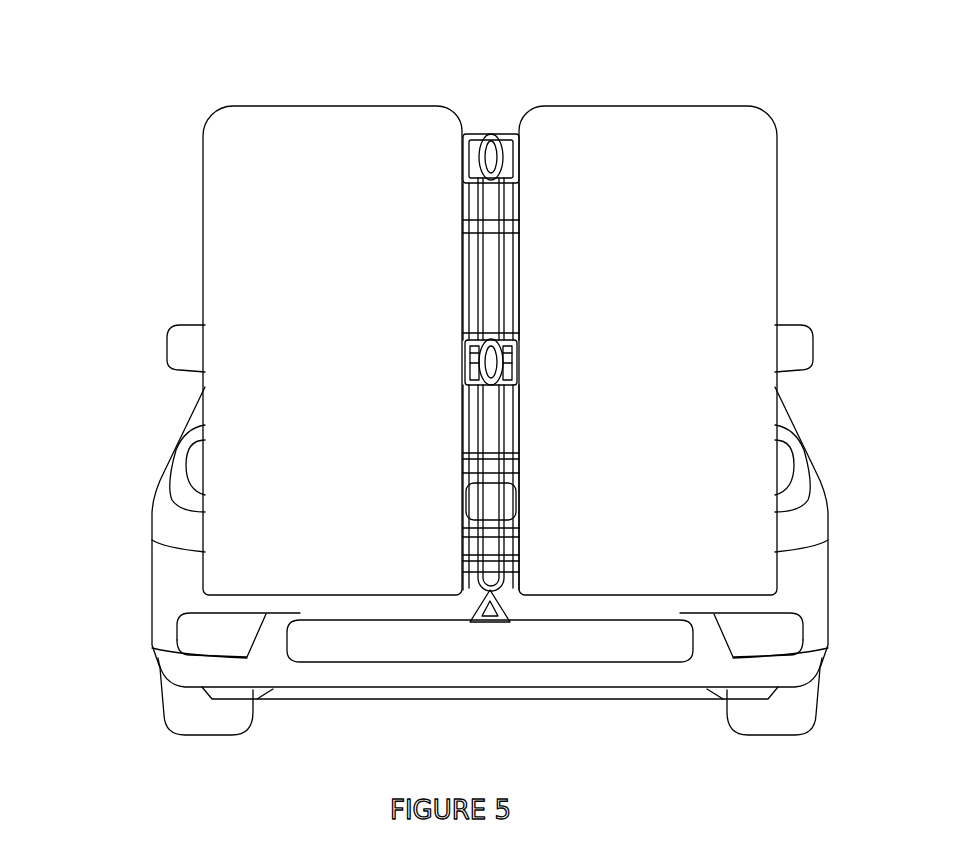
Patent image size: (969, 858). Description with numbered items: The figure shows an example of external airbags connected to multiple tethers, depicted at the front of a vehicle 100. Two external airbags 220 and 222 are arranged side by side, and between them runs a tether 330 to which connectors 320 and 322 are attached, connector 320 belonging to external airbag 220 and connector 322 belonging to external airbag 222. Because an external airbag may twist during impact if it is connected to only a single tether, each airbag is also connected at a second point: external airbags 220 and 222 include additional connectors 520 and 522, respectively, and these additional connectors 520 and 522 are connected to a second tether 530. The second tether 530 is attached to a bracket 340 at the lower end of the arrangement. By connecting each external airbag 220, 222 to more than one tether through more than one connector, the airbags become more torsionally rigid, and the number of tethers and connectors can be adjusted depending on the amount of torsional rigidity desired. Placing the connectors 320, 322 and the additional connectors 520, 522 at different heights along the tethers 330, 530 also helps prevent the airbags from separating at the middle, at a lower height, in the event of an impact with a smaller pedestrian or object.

The vehicle 100 is at (160, 662).
The external airbag 220 is at (760, 302).
The external airbag 222 is at (223, 272).
The connector 320 is at (501, 131).
The connector 322 is at (472, 131).
The tether 330 is at (503, 283).
The bracket 340 is at (510, 608).
The additional connector 520 is at (515, 368).
The additional connector 522 is at (463, 372).
The second tether 530 is at (503, 465).